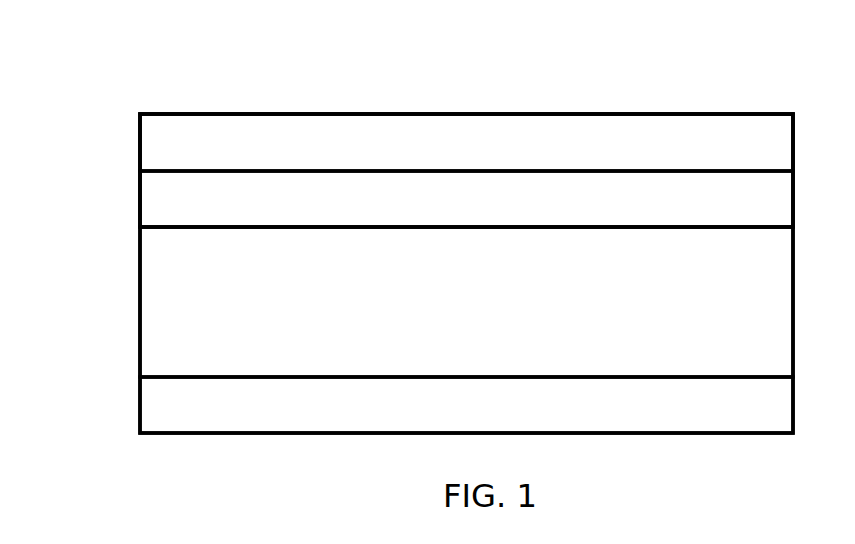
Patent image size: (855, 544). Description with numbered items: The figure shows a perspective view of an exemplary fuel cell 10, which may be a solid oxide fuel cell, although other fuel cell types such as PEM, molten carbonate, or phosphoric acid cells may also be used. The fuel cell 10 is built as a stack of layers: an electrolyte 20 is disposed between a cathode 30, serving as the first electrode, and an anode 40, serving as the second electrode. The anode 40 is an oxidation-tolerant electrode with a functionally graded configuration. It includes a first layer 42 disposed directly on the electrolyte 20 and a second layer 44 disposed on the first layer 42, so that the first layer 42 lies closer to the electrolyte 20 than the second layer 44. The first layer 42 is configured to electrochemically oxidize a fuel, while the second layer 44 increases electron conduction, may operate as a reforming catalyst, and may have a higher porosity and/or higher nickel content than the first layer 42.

The fuel cell 10 is at (466, 62).
The electrolyte 20 is at (466, 315).
The cathode 30 is at (466, 424).
The anode 40 is at (125, 114).
The first layer 42 is at (466, 220).
The second layer 44 is at (466, 160).